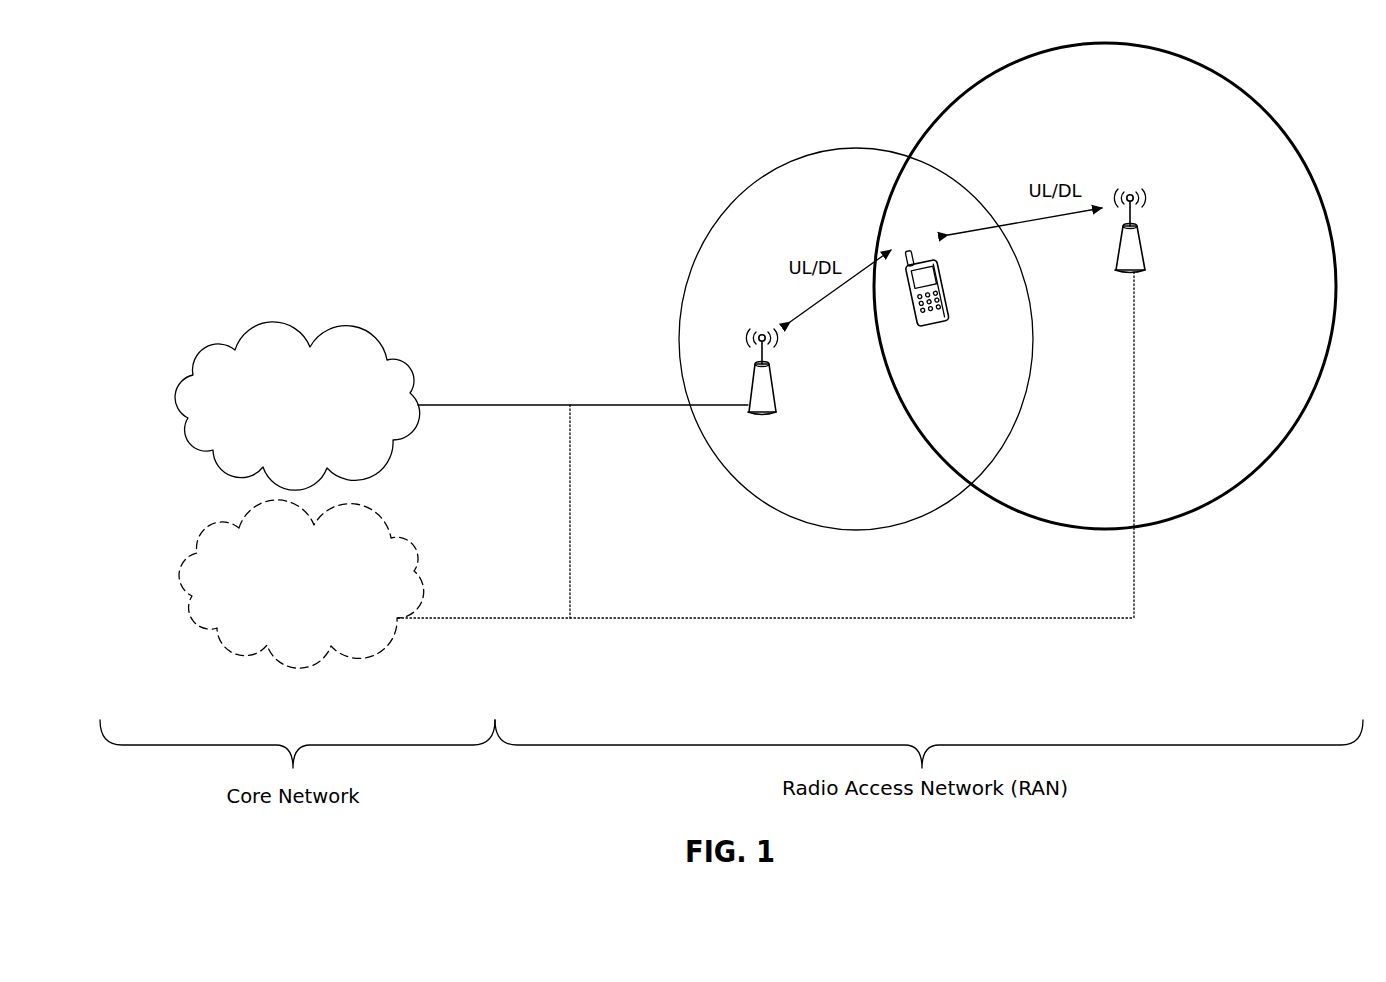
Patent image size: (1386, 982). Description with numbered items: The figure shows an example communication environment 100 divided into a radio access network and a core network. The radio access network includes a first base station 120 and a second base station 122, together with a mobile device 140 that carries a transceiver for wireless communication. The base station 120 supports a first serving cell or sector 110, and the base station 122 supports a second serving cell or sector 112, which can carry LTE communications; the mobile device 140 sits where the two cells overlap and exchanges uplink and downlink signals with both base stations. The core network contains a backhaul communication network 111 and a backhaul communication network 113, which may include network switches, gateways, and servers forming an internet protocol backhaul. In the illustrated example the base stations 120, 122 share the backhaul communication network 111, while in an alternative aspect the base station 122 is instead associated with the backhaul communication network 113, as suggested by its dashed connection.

The communication environment 100 is at (176, 102).
The serving cell or sector 110 is at (678, 338).
The backhaul communication network 111 is at (297, 406).
The serving cell or sector 112 is at (1185, 513).
The backhaul communication network 113 is at (301, 584).
The base station 120 is at (762, 386).
The base station 122 is at (1151, 231).
The mobile device 140 is at (925, 305).